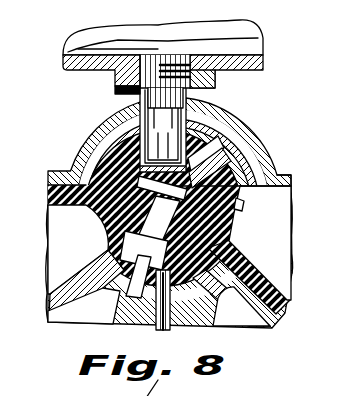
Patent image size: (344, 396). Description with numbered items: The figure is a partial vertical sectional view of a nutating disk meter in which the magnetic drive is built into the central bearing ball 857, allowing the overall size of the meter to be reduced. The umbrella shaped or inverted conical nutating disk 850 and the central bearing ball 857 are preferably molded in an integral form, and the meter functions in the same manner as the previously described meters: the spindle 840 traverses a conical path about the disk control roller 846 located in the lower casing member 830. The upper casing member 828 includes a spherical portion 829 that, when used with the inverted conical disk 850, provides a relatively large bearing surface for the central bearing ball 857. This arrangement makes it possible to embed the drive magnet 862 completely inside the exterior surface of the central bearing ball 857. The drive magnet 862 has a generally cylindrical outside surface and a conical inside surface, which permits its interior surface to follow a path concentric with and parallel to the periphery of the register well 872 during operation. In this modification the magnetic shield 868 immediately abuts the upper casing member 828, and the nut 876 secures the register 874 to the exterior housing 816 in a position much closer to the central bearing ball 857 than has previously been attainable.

The register 874 is at (246, 24).
The exterior housing 816 is at (252, 51).
The nut 876 is at (210, 68).
The register well 872 is at (105, 80).
The magnetic shield 868 is at (235, 108).
The spherical portion 829 is at (228, 142).
The drive magnet 862 is at (232, 160).
The upper casing member 828 is at (275, 165).
The central bearing ball 857 is at (236, 196).
The nutating disk 850 is at (255, 237).
The spindle 840 is at (94, 288).
The disk control roller 846 is at (208, 290).
The lower casing member 830 is at (208, 318).